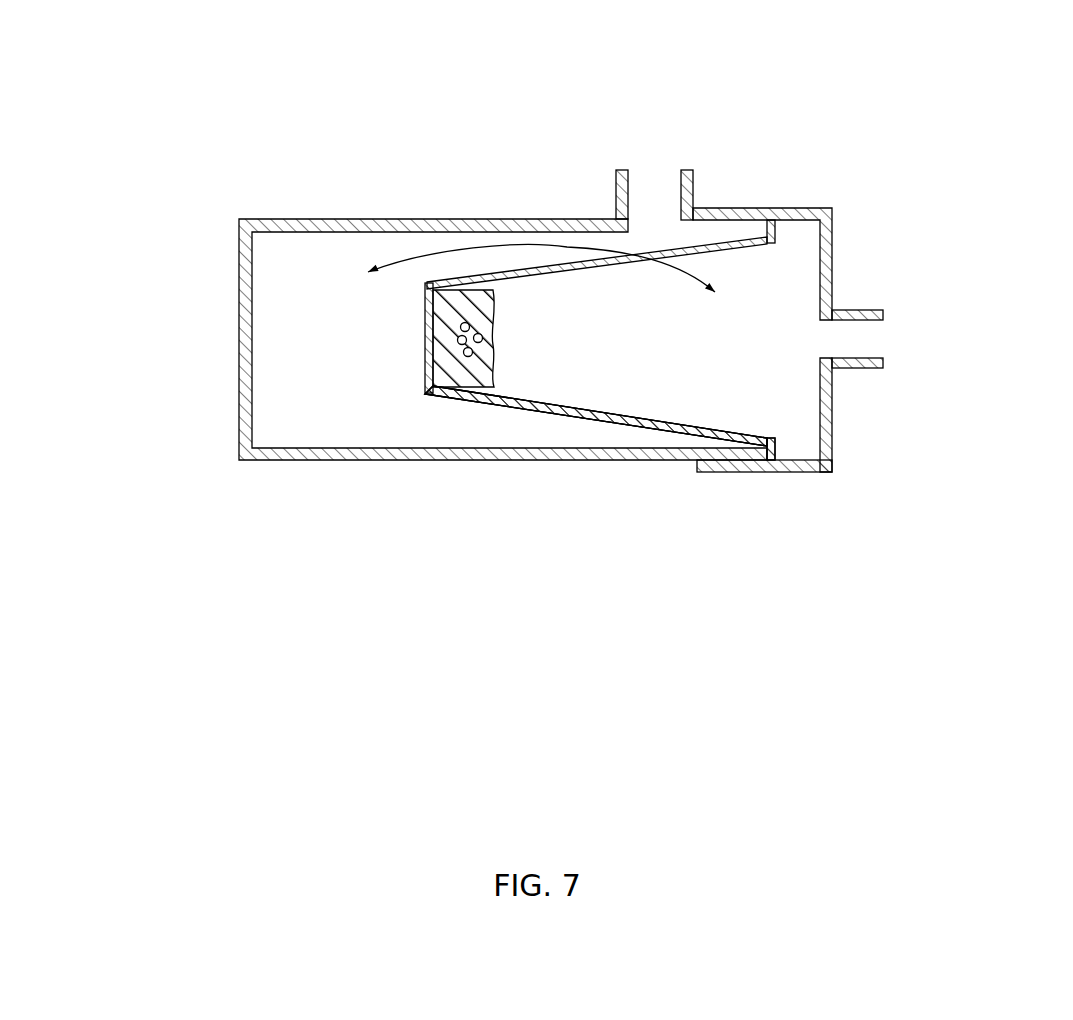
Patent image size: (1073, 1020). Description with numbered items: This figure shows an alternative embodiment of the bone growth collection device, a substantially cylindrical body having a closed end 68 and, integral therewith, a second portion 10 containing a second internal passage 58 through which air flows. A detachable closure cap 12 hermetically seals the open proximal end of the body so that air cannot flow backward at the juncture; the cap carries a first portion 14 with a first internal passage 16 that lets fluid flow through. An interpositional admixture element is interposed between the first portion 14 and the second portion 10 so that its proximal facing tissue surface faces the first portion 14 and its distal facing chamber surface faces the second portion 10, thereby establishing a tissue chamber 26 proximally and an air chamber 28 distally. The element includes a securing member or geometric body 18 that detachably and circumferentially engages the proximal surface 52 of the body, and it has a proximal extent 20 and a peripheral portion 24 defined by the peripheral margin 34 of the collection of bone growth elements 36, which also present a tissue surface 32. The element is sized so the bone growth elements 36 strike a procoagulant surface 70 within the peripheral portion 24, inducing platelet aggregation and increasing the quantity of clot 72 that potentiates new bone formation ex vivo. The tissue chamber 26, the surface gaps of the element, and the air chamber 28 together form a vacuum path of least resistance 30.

The second portion 10 is at (697, 195).
The detachable closure cap 12 is at (838, 260).
The first portion 14 is at (843, 378).
The first internal passage 16 is at (882, 338).
The securing member or geometric body 18 is at (766, 446).
The proximal extent 20 is at (780, 440).
The peripheral portion 24 is at (723, 425).
The tissue chamber 26 is at (751, 270).
The air chamber 28 is at (511, 282).
The vacuum path of least resistance 30 is at (572, 247).
The tissue surface 32 is at (497, 323).
The peripheral margin 34 is at (497, 285).
The collection of bone growth elements 36 is at (470, 378).
The proximal surface 52 is at (767, 472).
The second internal passage 58 is at (653, 175).
The closed end 68 is at (236, 325).
The procoagulant surface 70 is at (675, 417).
The quantity of clot 72 is at (460, 343).